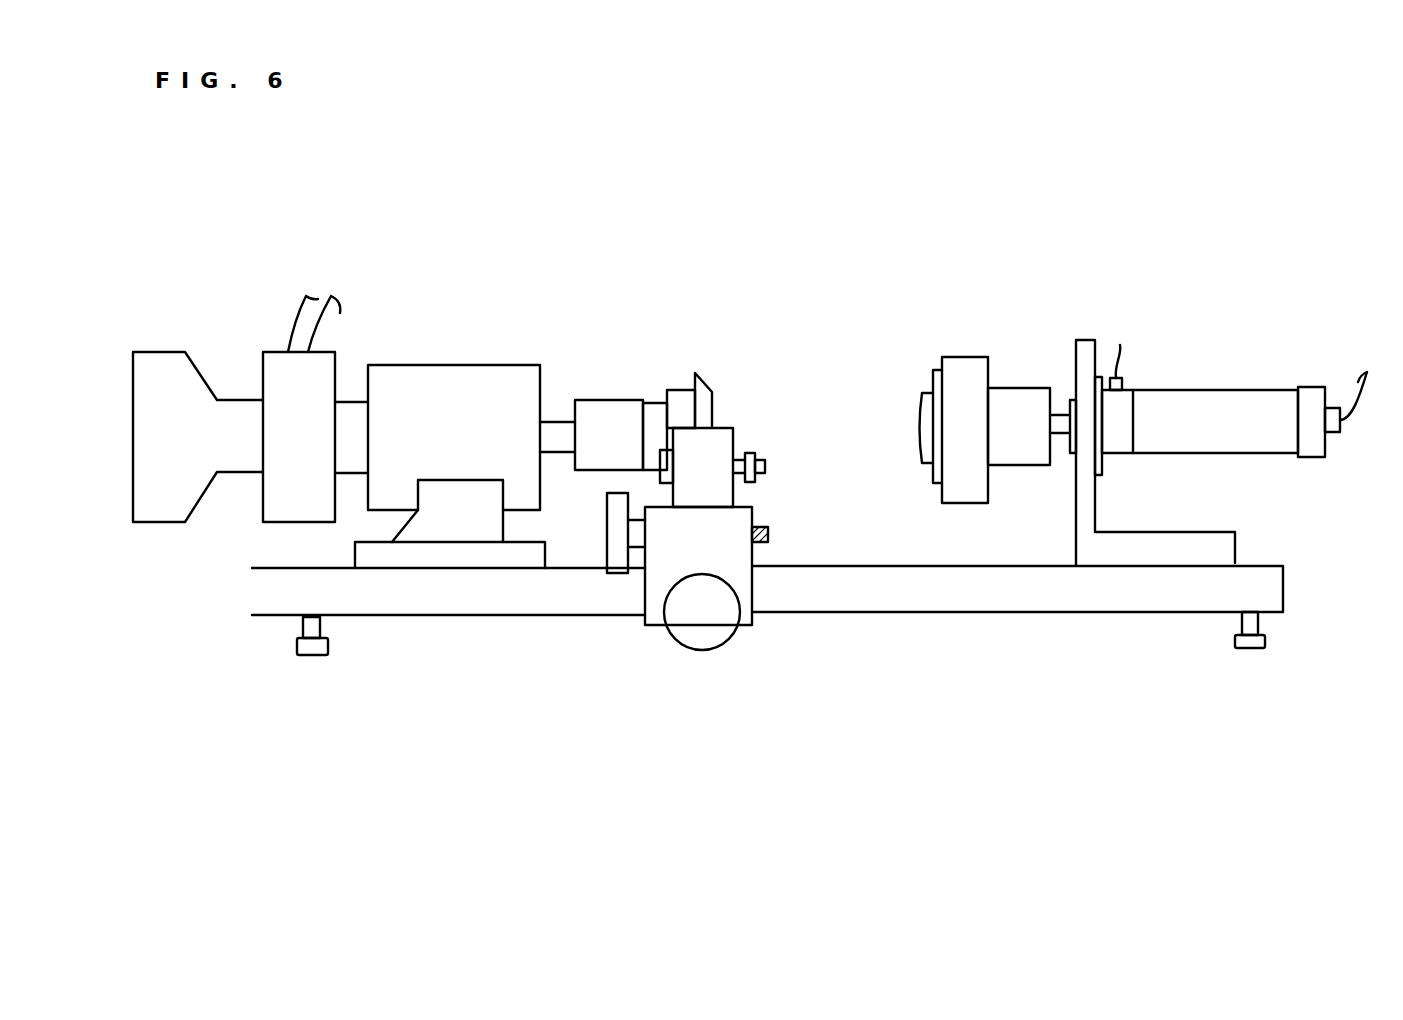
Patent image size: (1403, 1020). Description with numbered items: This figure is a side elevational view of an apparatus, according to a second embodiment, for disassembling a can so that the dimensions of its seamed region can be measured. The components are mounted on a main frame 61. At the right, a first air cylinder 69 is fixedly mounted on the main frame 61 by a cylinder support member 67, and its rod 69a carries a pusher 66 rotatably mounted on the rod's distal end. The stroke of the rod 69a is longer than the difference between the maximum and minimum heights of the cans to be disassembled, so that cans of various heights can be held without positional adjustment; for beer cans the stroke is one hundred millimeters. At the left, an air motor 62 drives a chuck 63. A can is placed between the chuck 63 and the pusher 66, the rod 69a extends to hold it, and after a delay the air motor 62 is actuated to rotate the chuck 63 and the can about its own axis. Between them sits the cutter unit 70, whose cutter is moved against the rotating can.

The main frame 61 is at (427, 608).
The air motor 62 is at (413, 383).
The chuck 63 is at (680, 379).
The pusher 66 is at (957, 383).
The cylinder support member 67 is at (1113, 553).
The first air cylinder 69 is at (1190, 398).
The rod 69a is at (1064, 417).
The cutter unit 70 is at (672, 668).